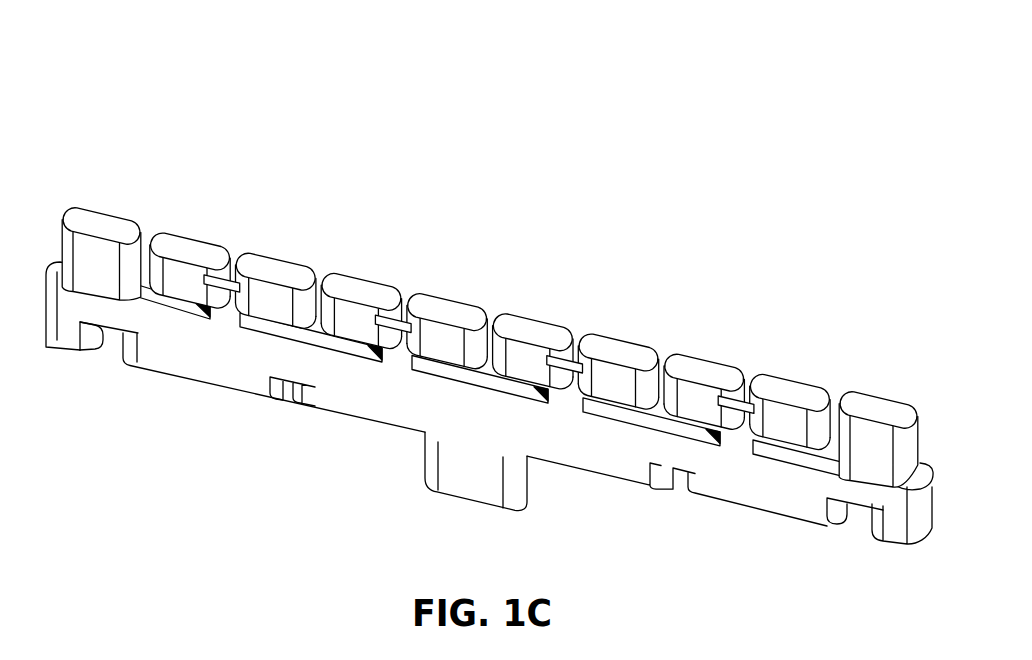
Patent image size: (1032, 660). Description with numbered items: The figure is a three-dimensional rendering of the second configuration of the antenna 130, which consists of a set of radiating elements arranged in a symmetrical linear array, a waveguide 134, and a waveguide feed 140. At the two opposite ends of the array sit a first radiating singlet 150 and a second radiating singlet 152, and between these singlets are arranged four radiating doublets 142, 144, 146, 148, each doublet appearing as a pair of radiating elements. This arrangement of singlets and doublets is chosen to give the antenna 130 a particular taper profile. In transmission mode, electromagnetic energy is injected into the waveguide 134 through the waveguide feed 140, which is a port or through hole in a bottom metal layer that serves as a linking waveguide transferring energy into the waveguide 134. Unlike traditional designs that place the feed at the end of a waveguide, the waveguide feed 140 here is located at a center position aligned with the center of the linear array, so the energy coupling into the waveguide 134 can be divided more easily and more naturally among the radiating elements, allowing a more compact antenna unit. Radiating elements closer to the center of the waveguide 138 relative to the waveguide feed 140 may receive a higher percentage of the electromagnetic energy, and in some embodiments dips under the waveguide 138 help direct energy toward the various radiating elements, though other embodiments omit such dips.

The antenna 130 is at (476, 278).
The waveguide 134 is at (48, 326).
The waveguide 138 is at (501, 437).
The waveguide feed 140 is at (447, 468).
The radiating doublet 142 is at (285, 273).
The radiating doublet 144 is at (447, 314).
The radiating doublet 146 is at (618, 351).
The radiating doublet 148 is at (786, 392).
The first radiating singlet 150 is at (107, 224).
The second radiating singlet 152 is at (871, 408).